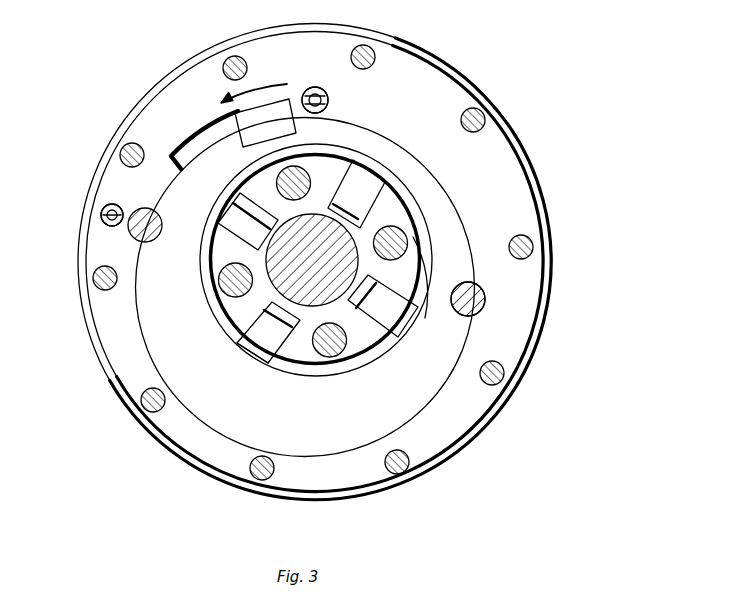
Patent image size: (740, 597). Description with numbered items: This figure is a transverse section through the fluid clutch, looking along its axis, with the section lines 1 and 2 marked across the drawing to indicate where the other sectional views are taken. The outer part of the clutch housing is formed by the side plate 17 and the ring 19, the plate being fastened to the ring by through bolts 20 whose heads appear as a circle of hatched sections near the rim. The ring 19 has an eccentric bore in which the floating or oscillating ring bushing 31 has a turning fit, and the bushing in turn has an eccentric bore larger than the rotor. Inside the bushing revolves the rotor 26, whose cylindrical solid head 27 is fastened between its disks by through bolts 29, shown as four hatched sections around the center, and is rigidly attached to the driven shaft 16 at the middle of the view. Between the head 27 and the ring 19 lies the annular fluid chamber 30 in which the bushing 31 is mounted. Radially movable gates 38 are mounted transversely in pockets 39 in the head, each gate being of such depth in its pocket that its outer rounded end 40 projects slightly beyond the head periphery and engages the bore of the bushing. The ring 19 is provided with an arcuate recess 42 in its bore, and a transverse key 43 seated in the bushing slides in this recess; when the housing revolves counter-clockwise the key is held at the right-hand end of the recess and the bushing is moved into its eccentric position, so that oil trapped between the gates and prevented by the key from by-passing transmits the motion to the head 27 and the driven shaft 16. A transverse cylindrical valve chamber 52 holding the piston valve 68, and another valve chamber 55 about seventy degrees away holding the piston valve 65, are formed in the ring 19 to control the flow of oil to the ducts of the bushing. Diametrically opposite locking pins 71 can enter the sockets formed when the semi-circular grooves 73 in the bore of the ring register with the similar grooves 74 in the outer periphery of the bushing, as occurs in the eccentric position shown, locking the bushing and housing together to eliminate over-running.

The section line 1- 1 is at (314, 148).
The section line 2- 2 is at (48, 188).
The driven shaft 16 is at (340, 276).
The side plate 17 is at (134, 104).
The ring 19 is at (507, 170).
The through bolts 20 is at (233, 56).
The rotor 26 is at (405, 208).
The head 27 is at (302, 347).
The through bolts 29 is at (238, 294).
The annular fluid chamber 30 is at (390, 352).
The ring bushing 31 is at (152, 312).
The gates 38 is at (237, 208).
The pockets 39 is at (352, 218).
The outer rounded end 40 is at (250, 348).
The arcuate recess 42 is at (207, 118).
The key 43 is at (270, 108).
The valve chamber 52 is at (123, 205).
The valve chamber 55 is at (329, 97).
The piston valve 65 is at (329, 105).
The piston valve 68 is at (120, 226).
The locking pins 71 is at (163, 223).
The semi-circular grooves 73 is at (485, 294).
The grooves 74 is at (426, 320).